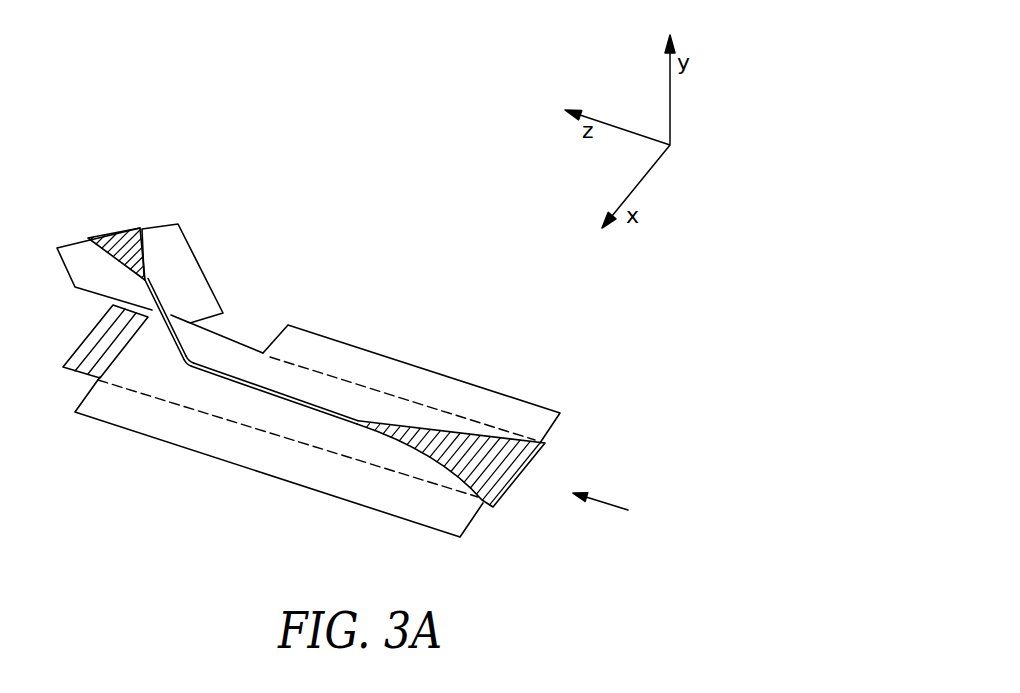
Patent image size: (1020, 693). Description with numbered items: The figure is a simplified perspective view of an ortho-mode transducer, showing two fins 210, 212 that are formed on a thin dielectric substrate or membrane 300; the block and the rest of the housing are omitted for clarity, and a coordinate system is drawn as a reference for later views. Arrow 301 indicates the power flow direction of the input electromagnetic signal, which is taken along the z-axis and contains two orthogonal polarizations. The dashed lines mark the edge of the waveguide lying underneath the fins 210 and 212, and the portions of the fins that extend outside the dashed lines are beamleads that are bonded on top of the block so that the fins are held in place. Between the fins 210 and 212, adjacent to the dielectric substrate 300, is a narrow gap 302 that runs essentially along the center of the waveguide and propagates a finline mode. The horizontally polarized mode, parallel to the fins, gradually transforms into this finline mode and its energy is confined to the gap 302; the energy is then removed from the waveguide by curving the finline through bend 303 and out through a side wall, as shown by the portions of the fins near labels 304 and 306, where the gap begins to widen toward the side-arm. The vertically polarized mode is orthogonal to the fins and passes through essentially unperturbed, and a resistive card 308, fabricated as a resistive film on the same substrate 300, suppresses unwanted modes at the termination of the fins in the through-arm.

The fin 210 is at (279, 457).
The fin 212 is at (450, 427).
The dielectric substrate 300 is at (340, 348).
The arrow 301 is at (595, 500).
The gap 302 is at (228, 383).
The bend 303 is at (188, 362).
The fin portion 304 is at (173, 238).
The fin portion 306 is at (72, 262).
The resistive card 308 is at (90, 347).